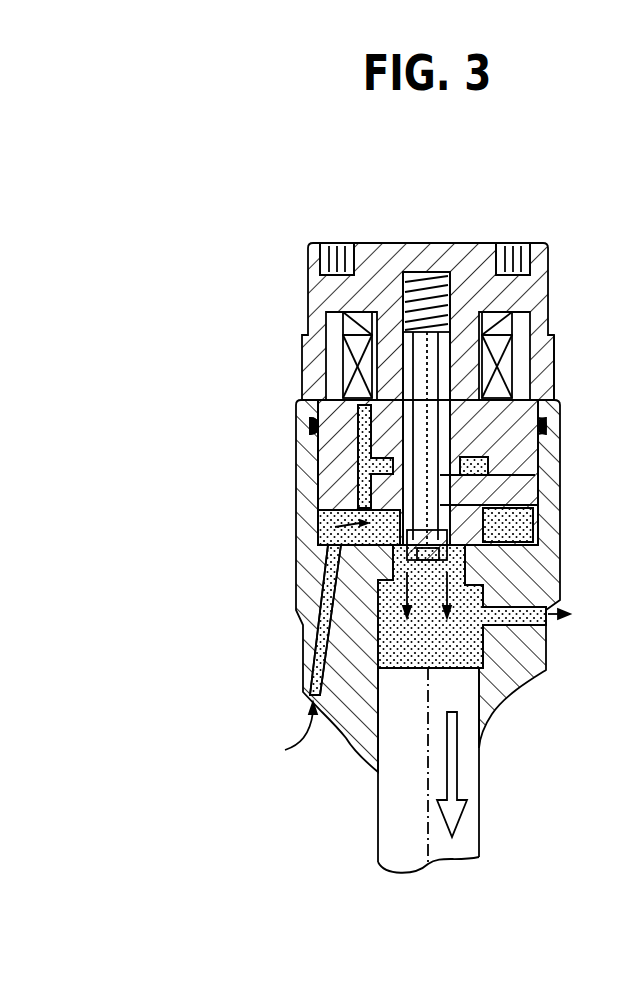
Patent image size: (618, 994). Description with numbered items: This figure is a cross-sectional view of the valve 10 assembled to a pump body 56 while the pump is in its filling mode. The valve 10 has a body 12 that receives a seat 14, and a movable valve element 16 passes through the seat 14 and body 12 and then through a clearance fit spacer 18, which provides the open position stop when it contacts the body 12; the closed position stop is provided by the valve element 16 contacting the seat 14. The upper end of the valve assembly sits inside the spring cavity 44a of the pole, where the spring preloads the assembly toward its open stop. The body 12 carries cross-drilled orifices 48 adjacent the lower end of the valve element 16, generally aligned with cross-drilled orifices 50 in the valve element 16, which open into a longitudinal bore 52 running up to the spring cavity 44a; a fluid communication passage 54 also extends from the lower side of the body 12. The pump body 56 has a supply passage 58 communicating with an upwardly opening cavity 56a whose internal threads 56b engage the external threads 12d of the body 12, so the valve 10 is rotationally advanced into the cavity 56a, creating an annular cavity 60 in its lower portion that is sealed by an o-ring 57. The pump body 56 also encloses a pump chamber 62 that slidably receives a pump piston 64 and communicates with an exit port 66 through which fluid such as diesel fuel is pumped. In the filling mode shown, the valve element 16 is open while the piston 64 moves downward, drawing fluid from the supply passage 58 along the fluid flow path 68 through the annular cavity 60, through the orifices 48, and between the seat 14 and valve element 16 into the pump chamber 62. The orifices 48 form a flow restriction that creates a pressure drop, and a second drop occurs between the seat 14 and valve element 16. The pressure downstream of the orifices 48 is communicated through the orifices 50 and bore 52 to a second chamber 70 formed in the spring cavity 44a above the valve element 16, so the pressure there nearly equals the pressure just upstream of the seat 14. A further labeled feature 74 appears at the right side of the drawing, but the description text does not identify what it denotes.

The valve 10 is at (392, 232).
The body 12 is at (303, 375).
The external threads 12d is at (318, 479).
The seat 14 is at (559, 546).
The movable valve element 16 is at (335, 458).
The spacer 18 is at (539, 476).
The spring cavity 44a is at (392, 270).
The cross-drilled orifices 48 is at (533, 467).
The cross-drilled orifices 50 is at (455, 582).
The longitudinal bore 52 is at (298, 405).
The fluid communication passage 54 is at (550, 524).
The pump body 56 is at (297, 657).
The upwardly opening cavity 56a is at (297, 606).
The internal threads 56b is at (330, 510).
The o-ring 57 is at (298, 423).
The supply passage 58 is at (276, 728).
The annular cavity 60 is at (345, 522).
The pump chamber 62 is at (492, 680).
The pump piston 64 is at (375, 805).
The exit port 66 is at (552, 626).
The fluid flow path 68 is at (345, 546).
The second chamber 70 is at (490, 286).
The housing portion 74 is at (586, 357).